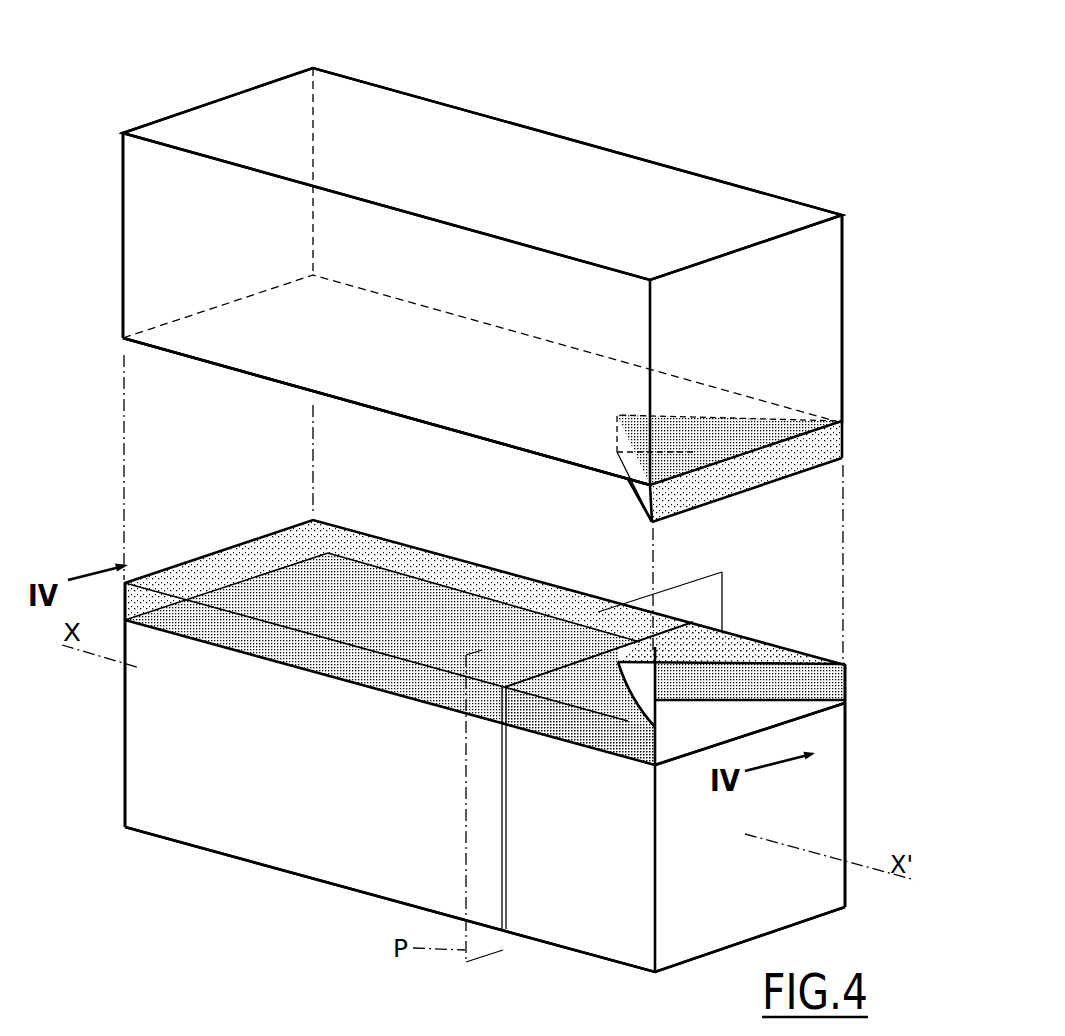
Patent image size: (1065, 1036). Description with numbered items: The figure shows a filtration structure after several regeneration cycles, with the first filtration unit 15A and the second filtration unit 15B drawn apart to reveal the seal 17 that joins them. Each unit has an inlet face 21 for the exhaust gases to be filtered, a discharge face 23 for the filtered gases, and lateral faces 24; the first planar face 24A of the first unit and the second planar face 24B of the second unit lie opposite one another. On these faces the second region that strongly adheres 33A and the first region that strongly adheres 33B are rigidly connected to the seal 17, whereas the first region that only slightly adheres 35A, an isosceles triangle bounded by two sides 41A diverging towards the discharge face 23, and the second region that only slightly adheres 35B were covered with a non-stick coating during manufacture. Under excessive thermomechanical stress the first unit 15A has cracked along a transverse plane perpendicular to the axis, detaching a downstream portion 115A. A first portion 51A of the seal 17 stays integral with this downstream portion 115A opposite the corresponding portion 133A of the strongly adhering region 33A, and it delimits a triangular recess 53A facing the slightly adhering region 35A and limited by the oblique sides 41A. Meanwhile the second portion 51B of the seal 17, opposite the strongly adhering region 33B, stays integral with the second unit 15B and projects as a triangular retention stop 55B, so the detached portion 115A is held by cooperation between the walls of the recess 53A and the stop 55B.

The first filtration unit 15A is at (245, 862).
The second filtration unit 15B is at (503, 100).
The seal 17 is at (247, 543).
The inlet face 21 is at (213, 100).
The discharge face 23 is at (822, 328).
The lateral faces 24 is at (610, 168).
The first planar face 24A is at (363, 548).
The second planar face 24B is at (433, 430).
The second region that strongly adheres 33A is at (363, 673).
The first region that strongly adheres 33B is at (735, 435).
The first region that only slightly adheres 35A is at (663, 752).
The second region that only slightly adheres 35B is at (300, 365).
The sides 41A is at (621, 753).
The first portion of the seal 51A is at (588, 688).
The second portion of the seal 51B is at (792, 468).
The triangular recess 53A is at (713, 717).
The triangular retention stop 55B is at (713, 481).
The downstream portion 115A is at (627, 947).
The corresponding portion of the second strongly adhering area 133A is at (557, 738).